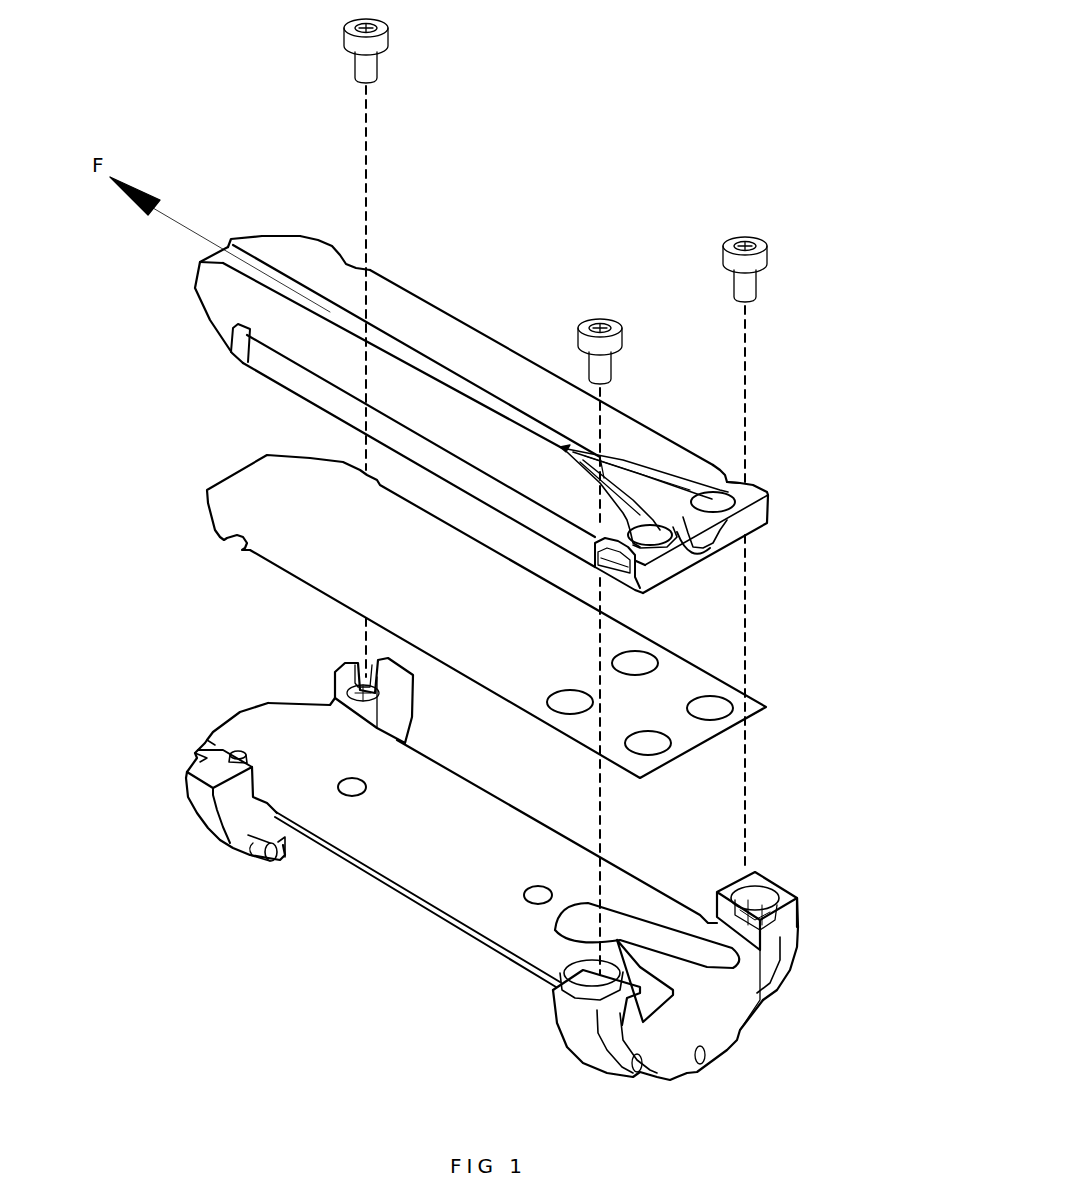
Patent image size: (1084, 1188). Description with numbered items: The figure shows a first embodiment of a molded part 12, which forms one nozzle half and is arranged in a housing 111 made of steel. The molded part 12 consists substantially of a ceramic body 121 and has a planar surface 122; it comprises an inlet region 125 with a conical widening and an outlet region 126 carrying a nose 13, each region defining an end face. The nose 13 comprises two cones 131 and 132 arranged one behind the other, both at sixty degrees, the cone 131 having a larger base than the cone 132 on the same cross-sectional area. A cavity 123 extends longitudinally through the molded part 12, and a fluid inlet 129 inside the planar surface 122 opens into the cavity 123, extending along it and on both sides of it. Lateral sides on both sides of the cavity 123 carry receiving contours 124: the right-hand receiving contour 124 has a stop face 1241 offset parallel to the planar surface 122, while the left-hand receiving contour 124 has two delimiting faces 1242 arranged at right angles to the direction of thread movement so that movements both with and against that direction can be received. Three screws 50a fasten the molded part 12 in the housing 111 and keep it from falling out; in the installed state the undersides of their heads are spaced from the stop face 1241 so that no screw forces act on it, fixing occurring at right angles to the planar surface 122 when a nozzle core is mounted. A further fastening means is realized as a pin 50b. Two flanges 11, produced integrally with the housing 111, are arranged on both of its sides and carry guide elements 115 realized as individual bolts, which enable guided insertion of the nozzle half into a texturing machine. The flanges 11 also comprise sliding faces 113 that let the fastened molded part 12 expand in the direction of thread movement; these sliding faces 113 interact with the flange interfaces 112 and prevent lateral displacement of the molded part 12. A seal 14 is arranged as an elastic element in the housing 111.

The screw 50a is at (344, 36).
The pin 50b is at (248, 753).
The flange 11 is at (187, 778).
The housing 111 is at (410, 868).
The flange interface 112 is at (287, 377).
The sliding face 113 is at (800, 945).
The guide element 115 is at (255, 852).
The molded part 12 is at (358, 368).
The ceramic body 121 is at (553, 303).
The planar surface 122 is at (440, 332).
The cavity 123 is at (470, 215).
The receiving contour 124 is at (232, 262).
The stop face 1241 is at (653, 592).
The delimiting face 1242 is at (237, 363).
The inlet region 125 is at (640, 386).
The outlet region 126 is at (472, 218).
The fluid inlet 129 is at (733, 495).
The nose 13 is at (335, 242).
The cone 131 is at (312, 322).
The cone 132 is at (303, 300).
The seal 14 is at (770, 716).